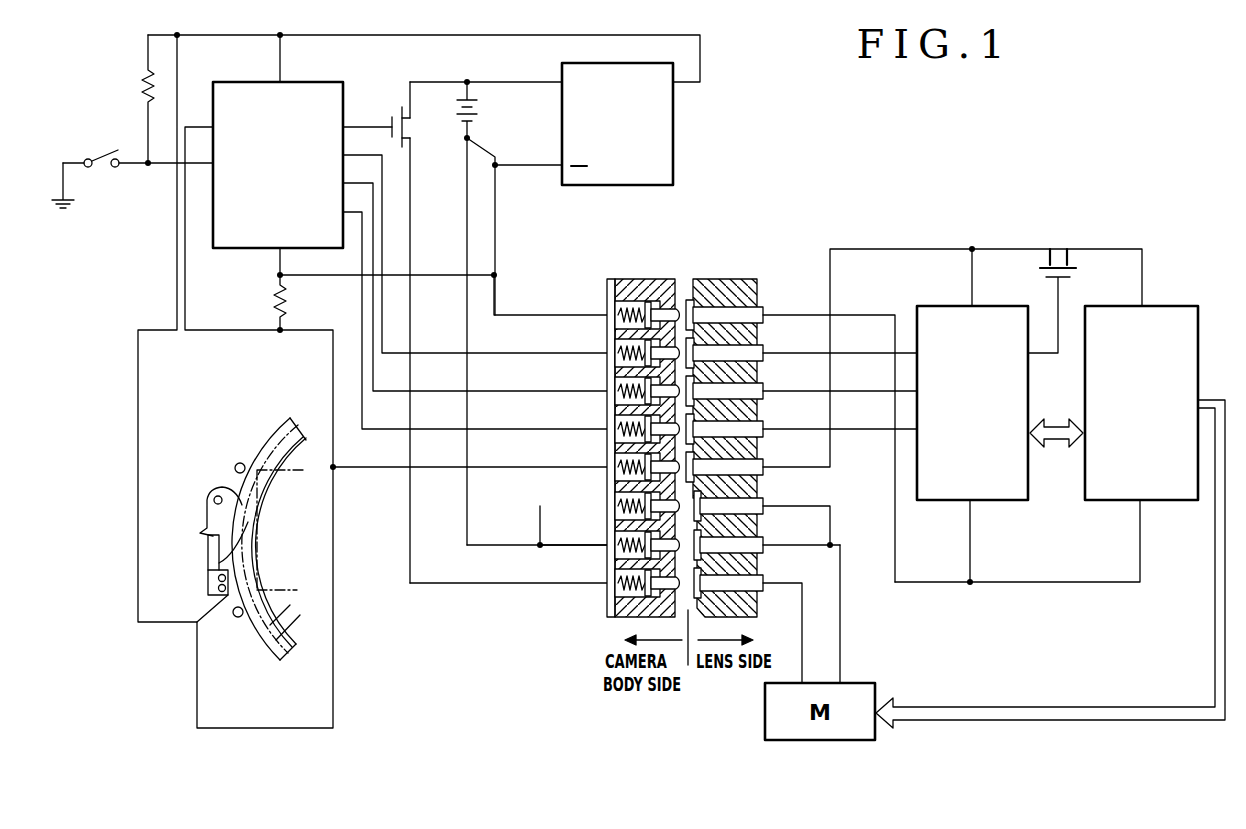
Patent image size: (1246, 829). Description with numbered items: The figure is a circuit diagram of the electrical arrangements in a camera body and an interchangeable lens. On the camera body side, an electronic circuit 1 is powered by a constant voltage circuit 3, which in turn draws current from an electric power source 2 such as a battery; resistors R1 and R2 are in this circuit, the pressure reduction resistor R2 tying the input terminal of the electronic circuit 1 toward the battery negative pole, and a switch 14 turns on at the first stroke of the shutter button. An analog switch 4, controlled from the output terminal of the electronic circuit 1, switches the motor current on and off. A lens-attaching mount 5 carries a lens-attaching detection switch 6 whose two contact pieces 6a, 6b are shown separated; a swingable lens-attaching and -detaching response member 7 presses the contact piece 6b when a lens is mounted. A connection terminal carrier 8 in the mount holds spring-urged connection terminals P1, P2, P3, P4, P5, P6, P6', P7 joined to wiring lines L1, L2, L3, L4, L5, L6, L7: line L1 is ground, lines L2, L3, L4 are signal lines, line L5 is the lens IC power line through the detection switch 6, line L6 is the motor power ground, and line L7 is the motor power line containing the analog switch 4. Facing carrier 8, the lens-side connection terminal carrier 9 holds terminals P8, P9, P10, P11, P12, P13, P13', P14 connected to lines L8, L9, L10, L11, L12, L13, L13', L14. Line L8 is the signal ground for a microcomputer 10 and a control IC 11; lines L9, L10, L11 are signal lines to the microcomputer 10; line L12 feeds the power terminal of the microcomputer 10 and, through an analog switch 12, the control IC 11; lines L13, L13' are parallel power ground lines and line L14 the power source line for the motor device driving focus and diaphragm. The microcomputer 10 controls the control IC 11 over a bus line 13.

The electronic circuit 1 is at (345, 92).
The electric power source 2 is at (480, 108).
The constant voltage circuit 3 is at (674, 138).
The analog switch 4 is at (412, 128).
The lens-attaching mount 5 is at (262, 437).
The lens-attaching detection switch 6 is at (208, 586).
The contact piece 6a is at (232, 562).
The contact piece 6b is at (206, 553).
The lens-attaching and -detaching response member 7 is at (207, 496).
The connection terminal carrier 8 is at (627, 426).
The connection terminal carrier 9 is at (753, 426).
The microcomputer 10 is at (923, 305).
The control IC 11 is at (1182, 305).
The analog switch 12 is at (1057, 262).
The bus line 13 is at (1053, 450).
The switch 14 is at (101, 158).
The resistor R1 is at (144, 82).
The pressure reduction resistor R2 is at (273, 306).
The wiring line L1 is at (496, 300).
The wiring line L2 is at (503, 352).
The wiring line L3 is at (503, 390).
The wiring line L4 is at (503, 428).
The wiring line L5 is at (503, 466).
The wiring line L6 is at (491, 544).
The wiring line L7 is at (491, 582).
The wiring line L8 is at (870, 297).
The wiring line L9 is at (870, 335).
The wiring line L10 is at (880, 391).
The wiring line L11 is at (880, 428).
The wiring line L12 is at (832, 450).
The wiring line L13 is at (868, 614).
The wiring line L13' is at (825, 527).
The wiring line L14 is at (803, 640).
The connection terminal P1 is at (615, 310).
The connection terminal P2 is at (615, 348).
The connection terminal P3 is at (615, 386).
The connection terminal P4 is at (615, 424).
The connection terminal P5 is at (615, 462).
The connection terminal P6 is at (628, 501).
The connection terminal P6' is at (627, 540).
The connection terminal P7 is at (615, 578).
The connection terminal P8 is at (763, 312).
The connection terminal P9 is at (763, 350).
The connection terminal P10 is at (763, 388).
The connection terminal P11 is at (763, 426).
The connection terminal P12 is at (763, 464).
The connection terminal P13 is at (754, 503).
The connection terminal P13' is at (757, 541).
The connection terminal P14 is at (763, 580).